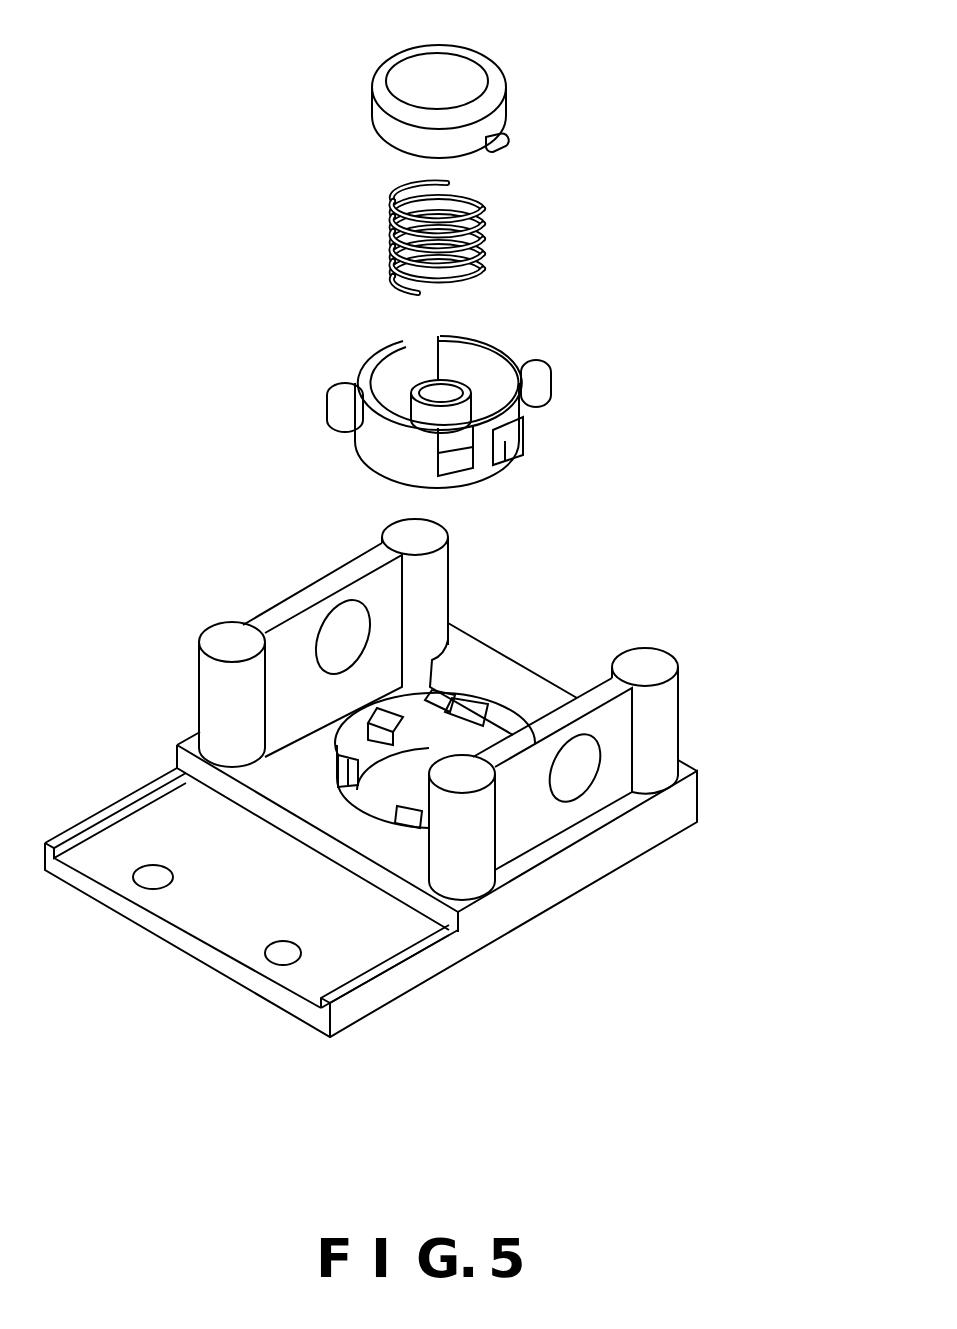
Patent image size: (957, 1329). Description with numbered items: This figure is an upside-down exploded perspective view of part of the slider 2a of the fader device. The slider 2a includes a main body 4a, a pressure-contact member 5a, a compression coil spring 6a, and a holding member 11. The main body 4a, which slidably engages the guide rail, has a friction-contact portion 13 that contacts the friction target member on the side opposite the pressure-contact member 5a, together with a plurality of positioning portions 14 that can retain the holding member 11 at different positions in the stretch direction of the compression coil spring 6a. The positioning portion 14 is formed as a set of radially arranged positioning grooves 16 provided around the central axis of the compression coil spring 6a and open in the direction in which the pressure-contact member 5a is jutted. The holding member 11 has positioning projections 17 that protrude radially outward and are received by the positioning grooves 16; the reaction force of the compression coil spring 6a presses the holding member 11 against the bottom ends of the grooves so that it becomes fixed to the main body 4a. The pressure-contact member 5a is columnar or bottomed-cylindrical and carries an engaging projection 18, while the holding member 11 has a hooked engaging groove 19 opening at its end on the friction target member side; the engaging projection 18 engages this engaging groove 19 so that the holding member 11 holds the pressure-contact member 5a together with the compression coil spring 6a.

The slider 2a is at (665, 165).
The pressure-contact member 5a is at (362, 87).
The engaging projection 18 is at (502, 150).
The compression coil spring 6a is at (395, 250).
The holding member 11 is at (515, 350).
The positioning projection 17 is at (338, 418).
The engaging groove 19 is at (440, 340).
The main body 4a is at (545, 932).
The friction-contact portion 13 is at (374, 585).
The positioning portion 14 is at (349, 773).
The positioning groove 16 is at (417, 817).